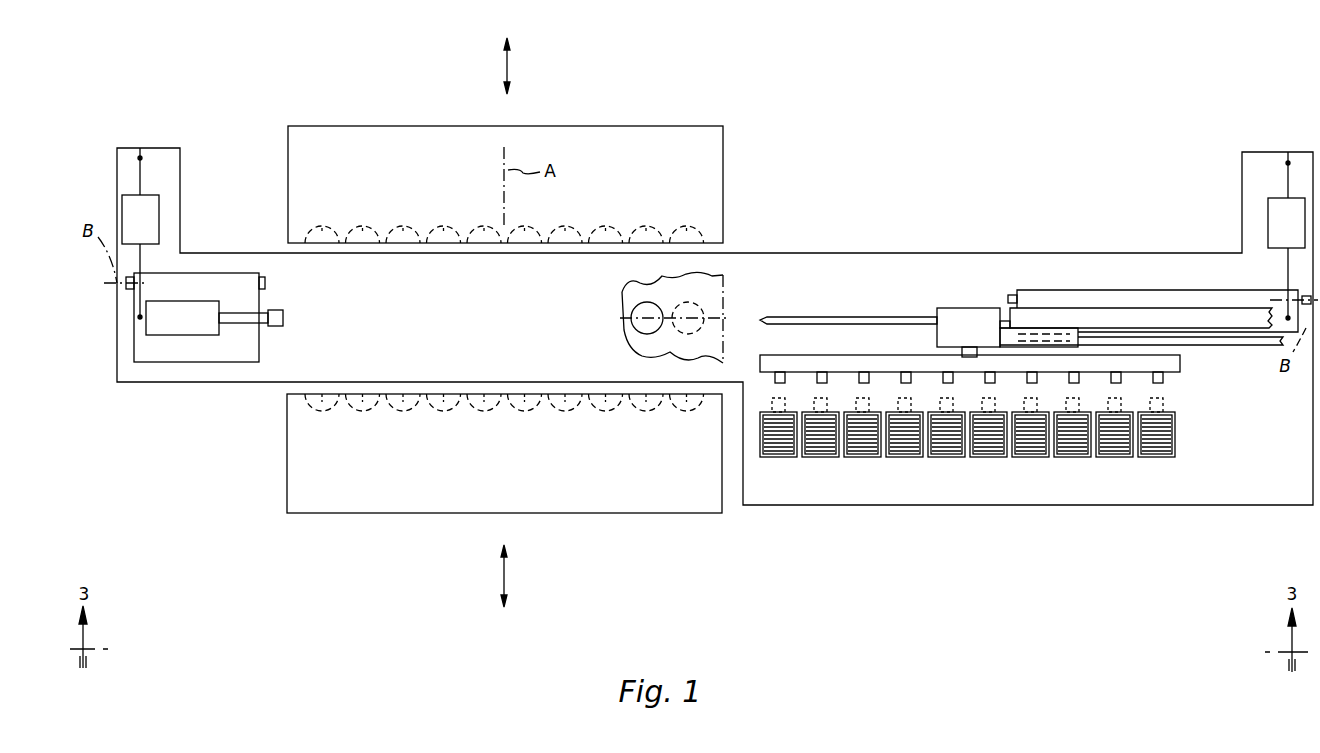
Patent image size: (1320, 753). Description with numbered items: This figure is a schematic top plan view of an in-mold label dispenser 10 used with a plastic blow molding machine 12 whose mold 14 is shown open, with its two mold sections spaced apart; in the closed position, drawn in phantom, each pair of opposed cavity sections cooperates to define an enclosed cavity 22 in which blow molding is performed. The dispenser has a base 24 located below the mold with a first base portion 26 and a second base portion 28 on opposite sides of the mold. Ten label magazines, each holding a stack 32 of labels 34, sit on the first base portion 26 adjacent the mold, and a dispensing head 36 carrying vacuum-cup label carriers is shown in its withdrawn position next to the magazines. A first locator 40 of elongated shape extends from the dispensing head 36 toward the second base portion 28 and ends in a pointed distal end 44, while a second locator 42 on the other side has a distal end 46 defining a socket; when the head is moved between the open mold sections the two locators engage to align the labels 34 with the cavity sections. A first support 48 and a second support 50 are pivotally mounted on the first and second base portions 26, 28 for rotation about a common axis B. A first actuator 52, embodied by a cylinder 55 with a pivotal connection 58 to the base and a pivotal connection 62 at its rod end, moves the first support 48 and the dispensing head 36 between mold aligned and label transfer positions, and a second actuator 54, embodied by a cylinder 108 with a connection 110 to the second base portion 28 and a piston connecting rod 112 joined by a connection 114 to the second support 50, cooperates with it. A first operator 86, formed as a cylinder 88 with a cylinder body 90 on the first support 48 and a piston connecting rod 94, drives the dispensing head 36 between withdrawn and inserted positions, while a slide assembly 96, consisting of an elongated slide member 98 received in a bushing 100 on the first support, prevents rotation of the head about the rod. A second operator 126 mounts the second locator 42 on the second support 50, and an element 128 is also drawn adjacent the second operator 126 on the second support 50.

The in-mold label dispenser 10 is at (993, 187).
The plastic blow molding machine 12 is at (732, 116).
The mold 14 is at (681, 127).
The cavity 22 is at (656, 306).
The base 24 is at (774, 250).
The first base portion 26 is at (903, 262).
The second base portion 28 is at (166, 370).
The stack 32 is at (1140, 448).
The labels 34 is at (1120, 420).
The dispensing head 36 is at (950, 306).
The first locator 40 is at (845, 317).
The second locator 42 is at (250, 325).
The distal end 44 is at (767, 318).
The distal end 46 is at (283, 313).
The first support 48 is at (1078, 294).
The second support 50 is at (152, 347).
The first actuator 52 is at (1268, 215).
The second actuator 54 is at (160, 205).
The cylinder 55 is at (1300, 205).
The pivotal connection 58 is at (1288, 163).
The pivotal connection 62 is at (1288, 317).
The first operator 86 is at (1115, 305).
The cylinder 88 is at (1155, 310).
The cylinder body 90 is at (1198, 315).
The piston connecting rod 94 is at (1001, 321).
The slide assembly 96 is at (962, 352).
The elongated slide member 98 is at (1190, 338).
The bushing 100 is at (1038, 330).
The cylinder 108 is at (148, 205).
The connection 110 is at (140, 158).
The piston connecting rod 112 is at (142, 296).
The connection 114 is at (140, 318).
The second operator 126 is at (186, 343).
The motor housing 128 is at (210, 330).